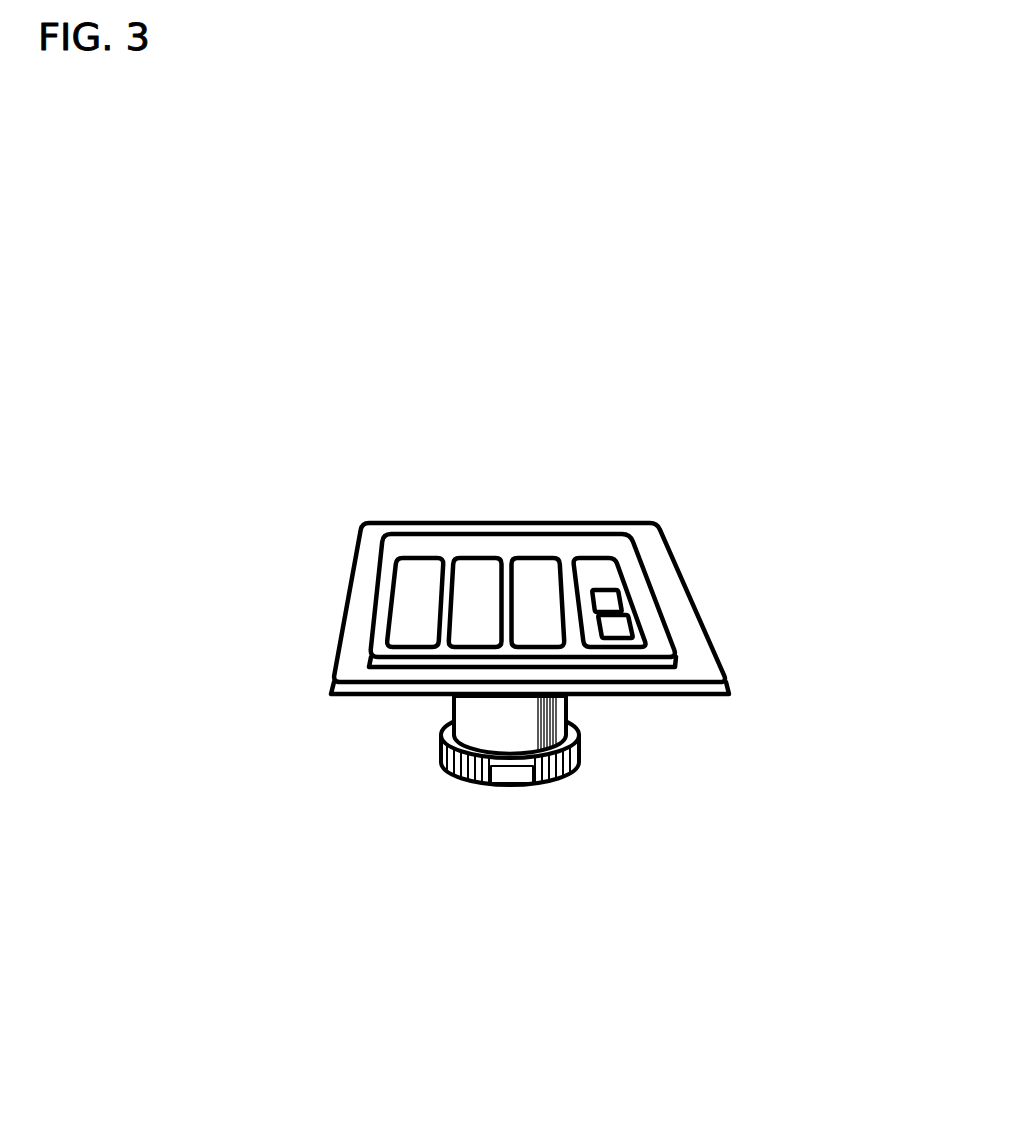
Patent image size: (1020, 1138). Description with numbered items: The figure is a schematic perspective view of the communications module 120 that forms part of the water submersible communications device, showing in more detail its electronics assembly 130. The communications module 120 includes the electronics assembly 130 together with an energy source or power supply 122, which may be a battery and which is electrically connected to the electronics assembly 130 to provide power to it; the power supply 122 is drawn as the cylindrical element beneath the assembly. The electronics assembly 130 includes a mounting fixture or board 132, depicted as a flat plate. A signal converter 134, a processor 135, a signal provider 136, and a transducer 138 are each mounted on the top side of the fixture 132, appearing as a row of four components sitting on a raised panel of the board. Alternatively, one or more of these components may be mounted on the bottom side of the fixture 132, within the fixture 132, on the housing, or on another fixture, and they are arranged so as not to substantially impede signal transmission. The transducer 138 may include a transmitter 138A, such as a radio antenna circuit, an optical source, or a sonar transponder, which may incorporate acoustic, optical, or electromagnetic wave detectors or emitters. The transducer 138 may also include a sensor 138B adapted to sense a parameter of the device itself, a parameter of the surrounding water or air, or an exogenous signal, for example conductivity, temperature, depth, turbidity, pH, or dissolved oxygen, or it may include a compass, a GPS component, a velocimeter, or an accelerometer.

The communications module 120 is at (555, 262).
The power supply 122 is at (515, 782).
The electronics assembly 130 is at (300, 556).
The mounting fixture 132 is at (335, 639).
The signal converter 134 is at (420, 574).
The processor 135 is at (481, 578).
The signal provider 136 is at (538, 577).
The transducer 138 is at (595, 573).
The transmitter 138A is at (608, 602).
The sensor 138B is at (620, 628).